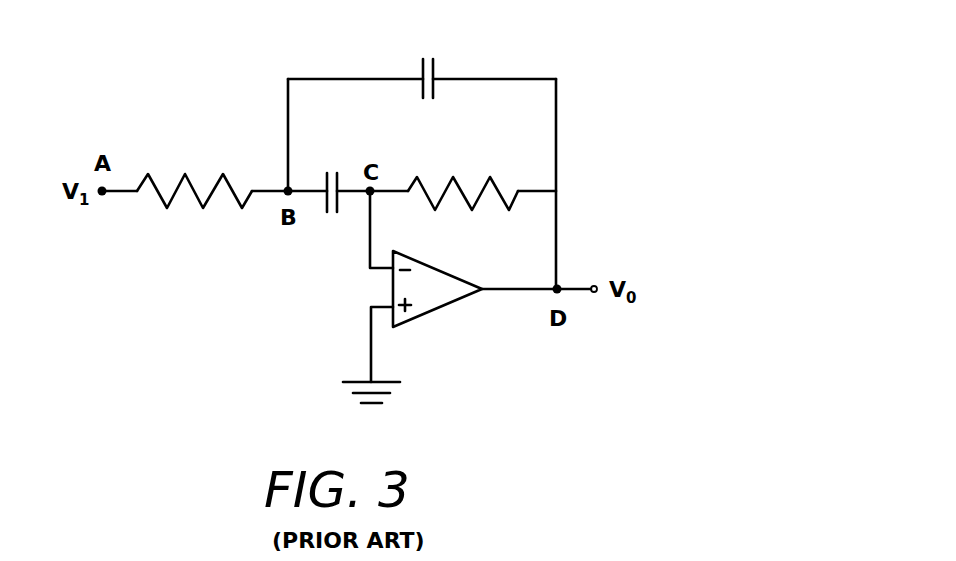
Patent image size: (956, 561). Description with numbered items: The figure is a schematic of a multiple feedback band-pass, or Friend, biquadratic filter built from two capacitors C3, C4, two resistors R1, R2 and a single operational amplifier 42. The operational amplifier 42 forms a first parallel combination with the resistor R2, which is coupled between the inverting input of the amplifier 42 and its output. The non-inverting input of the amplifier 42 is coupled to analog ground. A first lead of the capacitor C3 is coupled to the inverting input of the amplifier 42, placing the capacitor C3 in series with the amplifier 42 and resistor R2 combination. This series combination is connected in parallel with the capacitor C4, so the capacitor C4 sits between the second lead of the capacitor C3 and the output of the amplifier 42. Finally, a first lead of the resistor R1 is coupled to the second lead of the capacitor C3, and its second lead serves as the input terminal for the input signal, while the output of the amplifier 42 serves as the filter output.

The operational amplifier 42 is at (430, 310).
The first resistor R1 is at (194, 174).
The second resistor R2 is at (463, 175).
The first capacitor C3 is at (331, 176).
The second capacitor C4 is at (428, 62).